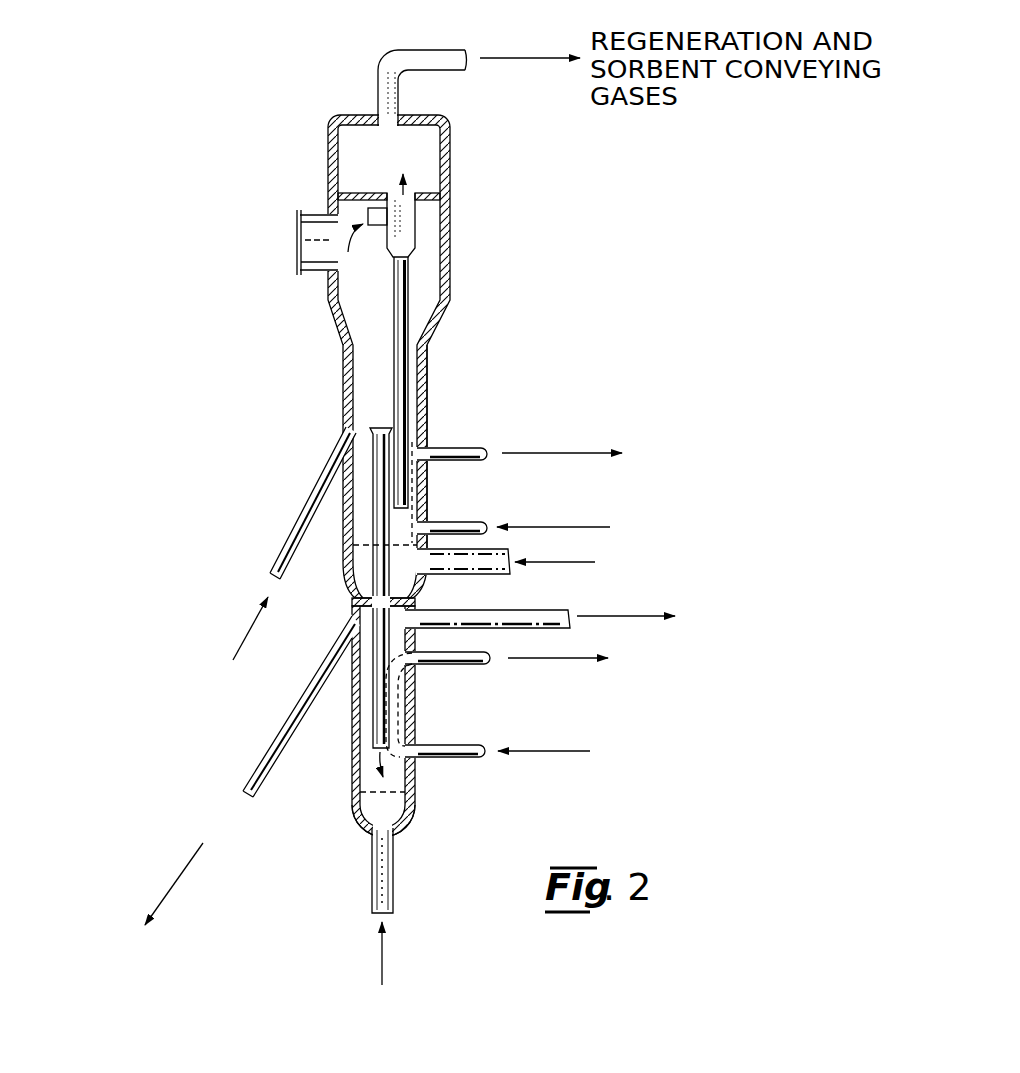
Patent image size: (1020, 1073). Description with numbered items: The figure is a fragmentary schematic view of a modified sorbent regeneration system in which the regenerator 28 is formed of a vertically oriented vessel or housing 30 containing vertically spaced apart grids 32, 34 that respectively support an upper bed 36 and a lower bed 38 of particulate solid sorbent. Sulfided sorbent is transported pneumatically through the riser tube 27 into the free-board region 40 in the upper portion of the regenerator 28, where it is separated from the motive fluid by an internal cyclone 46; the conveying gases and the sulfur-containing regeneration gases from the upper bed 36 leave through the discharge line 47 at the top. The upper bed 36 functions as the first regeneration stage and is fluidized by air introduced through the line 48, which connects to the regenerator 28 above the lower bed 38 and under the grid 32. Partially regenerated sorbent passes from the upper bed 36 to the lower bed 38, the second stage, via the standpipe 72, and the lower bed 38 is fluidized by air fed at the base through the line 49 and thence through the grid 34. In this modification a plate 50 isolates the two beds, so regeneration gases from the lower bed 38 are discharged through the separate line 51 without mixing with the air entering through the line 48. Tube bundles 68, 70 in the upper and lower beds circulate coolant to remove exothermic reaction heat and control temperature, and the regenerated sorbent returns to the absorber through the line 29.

The riser tube 27 is at (310, 495).
The regenerator 28 is at (334, 346).
The line 29 is at (268, 750).
The vessel or housing 30 is at (428, 372).
The grid 32 is at (350, 600).
The grid 34 is at (357, 828).
The upper bed 36 is at (372, 447).
The lower bed 38 is at (375, 780).
The free-board region 40 is at (420, 270).
The internal cyclone 46 is at (412, 218).
The discharge line 47 is at (410, 48).
The line 48 is at (495, 572).
The line 49 is at (372, 885).
The plate 50 is at (417, 590).
The line 51 is at (485, 628).
The tube bundle 68 is at (412, 478).
The tube bundle 70 is at (397, 707).
The standpipe 72 is at (372, 505).